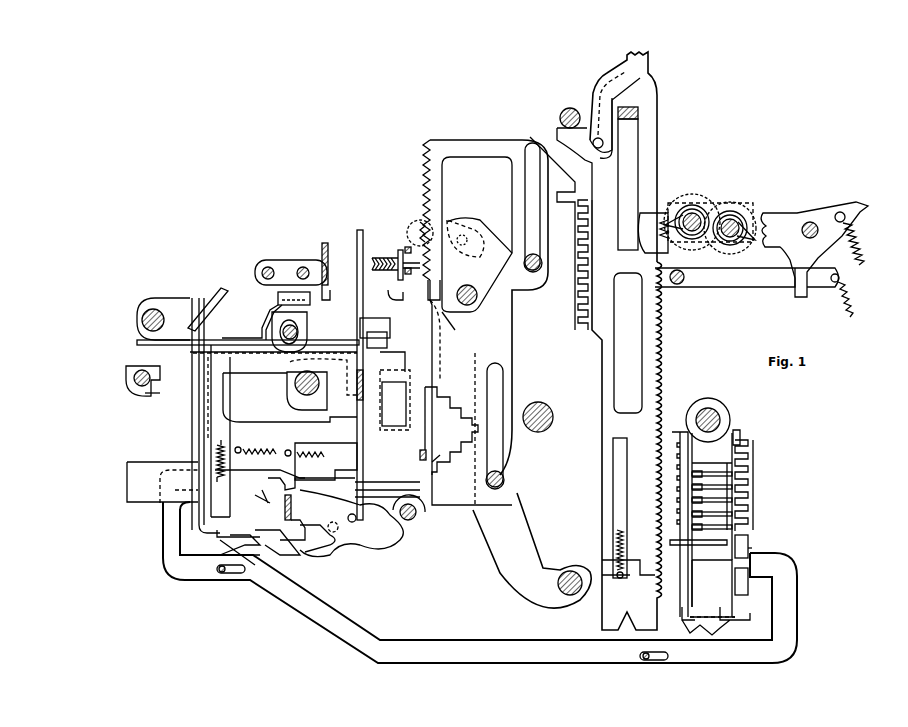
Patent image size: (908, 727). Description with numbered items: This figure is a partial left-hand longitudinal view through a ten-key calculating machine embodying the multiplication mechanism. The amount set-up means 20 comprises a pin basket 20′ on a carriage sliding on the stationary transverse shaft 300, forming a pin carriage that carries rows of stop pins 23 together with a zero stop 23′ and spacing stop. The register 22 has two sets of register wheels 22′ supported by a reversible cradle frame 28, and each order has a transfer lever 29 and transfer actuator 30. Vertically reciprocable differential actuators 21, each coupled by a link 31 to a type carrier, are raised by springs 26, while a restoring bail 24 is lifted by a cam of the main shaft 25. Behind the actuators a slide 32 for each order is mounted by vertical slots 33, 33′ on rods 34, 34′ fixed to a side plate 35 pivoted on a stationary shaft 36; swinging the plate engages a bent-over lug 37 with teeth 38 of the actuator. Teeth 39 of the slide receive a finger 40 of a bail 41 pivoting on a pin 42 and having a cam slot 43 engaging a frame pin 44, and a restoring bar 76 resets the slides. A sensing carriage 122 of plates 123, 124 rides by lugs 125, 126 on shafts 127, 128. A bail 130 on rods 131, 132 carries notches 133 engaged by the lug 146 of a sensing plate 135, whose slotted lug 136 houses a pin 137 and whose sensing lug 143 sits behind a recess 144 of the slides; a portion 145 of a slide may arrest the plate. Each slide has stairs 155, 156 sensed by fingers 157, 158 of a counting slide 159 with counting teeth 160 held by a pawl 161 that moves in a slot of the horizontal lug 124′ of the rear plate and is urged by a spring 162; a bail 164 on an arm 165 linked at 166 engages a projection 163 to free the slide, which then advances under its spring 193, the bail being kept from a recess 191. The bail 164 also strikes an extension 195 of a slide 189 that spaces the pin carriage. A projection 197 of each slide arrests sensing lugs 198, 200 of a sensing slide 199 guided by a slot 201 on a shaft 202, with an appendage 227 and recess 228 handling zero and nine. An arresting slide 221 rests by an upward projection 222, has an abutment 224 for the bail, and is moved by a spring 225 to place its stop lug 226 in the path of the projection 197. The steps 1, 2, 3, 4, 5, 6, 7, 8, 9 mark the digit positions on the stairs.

The step 1 is at (440, 475).
The step 2 is at (451, 461).
The step 3 is at (462, 449).
The step 4 is at (473, 437).
The step 5 is at (482, 424).
The step 6 is at (473, 414).
The step 7 is at (461, 401).
The step 8 is at (448, 391).
The step 9 is at (432, 379).
The amount set-up means 20 is at (748, 422).
The pin basket 20′ is at (757, 470).
The differential actuator 21 is at (664, 373).
The register 22 is at (719, 198).
The register wheels 22′ is at (680, 205).
The stop pins 23 is at (748, 520).
The zero stop 23′ is at (755, 545).
The restoring bail 24 is at (569, 108).
The main shaft 25 is at (552, 412).
The springs 26 is at (615, 543).
The cradle frame 28 is at (760, 214).
The transfer lever 29 is at (752, 283).
The transfer actuator 30 is at (804, 218).
The link 31 is at (648, 63).
The slide 32 is at (505, 322).
The vertical slot 33 is at (541, 234).
The vertical slot 33′ is at (503, 370).
The rod 34 is at (535, 273).
The rod 34′ is at (504, 478).
The side plate 35 is at (503, 245).
The stationary shaft 36 is at (565, 572).
The bent-over lug 37 is at (565, 200).
The teeth 38 is at (582, 265).
The teeth 39 is at (422, 192).
The finger 40 is at (398, 256).
The bail 41 is at (406, 248).
The pin 42 is at (417, 228).
The cam slot 43 is at (460, 233).
The pin 44 is at (478, 222).
The restoring bar 76 is at (471, 288).
The sensing carriage 122 is at (185, 426).
The plate 123 is at (363, 445).
The rear plate 124 is at (195, 456).
The horizontal lug 124′ is at (246, 580).
The lugs 125 is at (288, 383).
The lugs 126 is at (140, 310).
The transverse shaft 127 is at (312, 382).
The transverse shaft 128 is at (142, 321).
The bail 130 is at (328, 274).
The transverse rod 131 is at (300, 270).
The transverse rod 132 is at (264, 270).
The notches 133 is at (339, 292).
The sensing plate 135 is at (372, 340).
The slotted lug 136 is at (303, 318).
The pin 137 is at (298, 334).
The sensing lug 143 is at (400, 290).
The recess 144 is at (442, 308).
The portion 145 is at (426, 291).
The lug 146 is at (278, 299).
The descending stair 155 is at (455, 430).
The ascending stair 156 is at (458, 410).
The sensing finger 157 is at (420, 510).
The sensing finger 158 is at (400, 470).
The counting slide 159 is at (343, 462).
The counting teeth 160 is at (284, 508).
The pawl 161 is at (225, 530).
The spring 162 is at (214, 452).
The projection 163 is at (280, 545).
The bail 164 is at (315, 530).
The arm 165 is at (355, 540).
The link point 166 is at (410, 518).
The slide 189 is at (162, 537).
The recess 191 is at (285, 484).
The spring 193 is at (253, 422).
The extension 195 is at (325, 480).
The projection 197 is at (388, 320).
The sensing lug 198 is at (388, 365).
The sensing slide 199 is at (243, 365).
The sensing lug 200 is at (380, 400).
The slot 201 is at (145, 393).
The shaft 202 is at (136, 368).
The arresting slide 221 is at (240, 423).
The upward projection 222 is at (222, 332).
The abutment 224 is at (269, 498).
The spring 225 is at (300, 448).
The stop lug 226 is at (390, 392).
The appendage 227 is at (386, 340).
The recess 228 is at (420, 456).
The stationary transverse shaft 300 is at (708, 408).